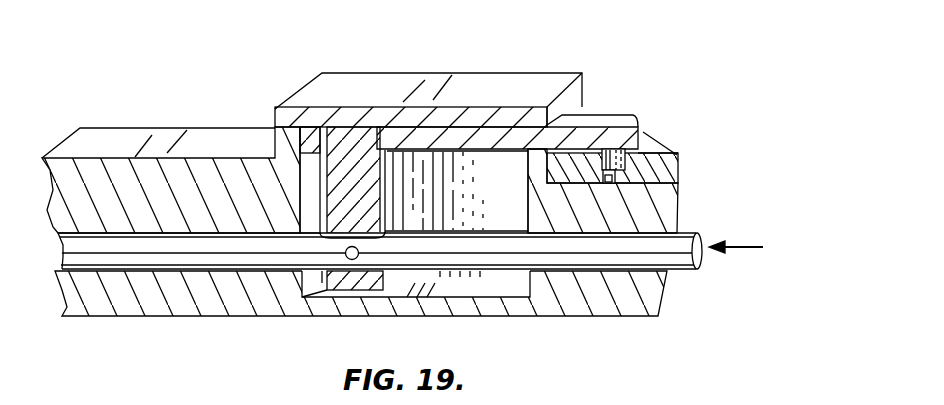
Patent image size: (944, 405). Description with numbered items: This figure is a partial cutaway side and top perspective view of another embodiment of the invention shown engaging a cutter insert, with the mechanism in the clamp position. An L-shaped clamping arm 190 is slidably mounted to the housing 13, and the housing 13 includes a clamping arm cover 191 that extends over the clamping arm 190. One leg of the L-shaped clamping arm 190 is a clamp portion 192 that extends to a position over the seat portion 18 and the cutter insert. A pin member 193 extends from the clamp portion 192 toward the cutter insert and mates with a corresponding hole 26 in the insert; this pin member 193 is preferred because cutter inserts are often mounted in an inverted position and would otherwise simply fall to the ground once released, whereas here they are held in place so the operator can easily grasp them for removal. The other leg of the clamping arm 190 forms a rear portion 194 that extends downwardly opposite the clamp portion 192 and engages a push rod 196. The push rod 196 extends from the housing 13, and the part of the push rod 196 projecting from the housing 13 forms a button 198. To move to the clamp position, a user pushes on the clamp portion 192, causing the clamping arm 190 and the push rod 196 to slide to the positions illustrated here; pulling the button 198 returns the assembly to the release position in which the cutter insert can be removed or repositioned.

The housing 13 is at (115, 137).
The seat portion 18 is at (677, 185).
The hole 26 is at (614, 172).
The L-shaped clamping arm 190 is at (598, 118).
The clamping arm cover 191 is at (370, 87).
The clamp portion 192 is at (620, 134).
The pin member 193 is at (615, 160).
The rear portion 194 is at (347, 166).
The push rod 196 is at (588, 256).
The button 198 is at (705, 254).